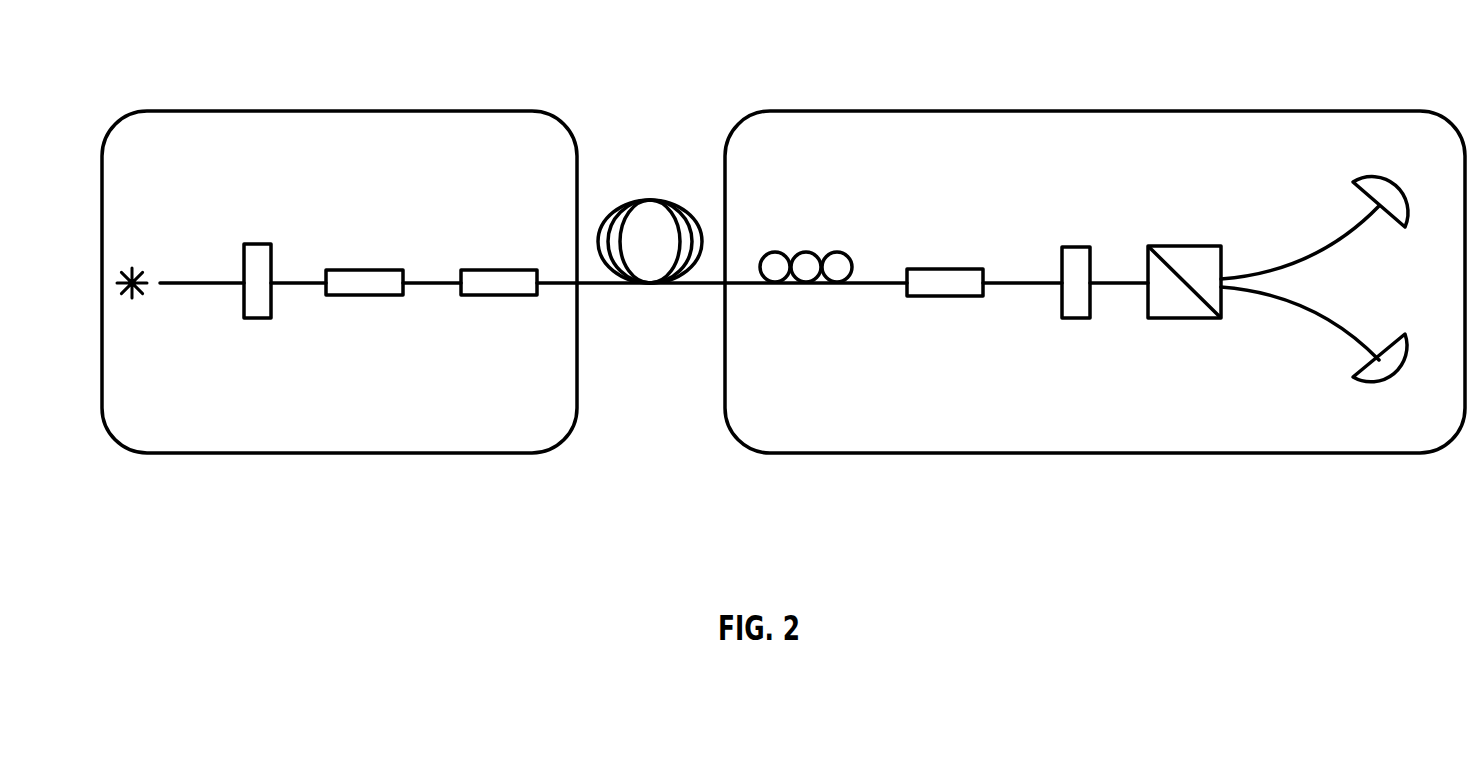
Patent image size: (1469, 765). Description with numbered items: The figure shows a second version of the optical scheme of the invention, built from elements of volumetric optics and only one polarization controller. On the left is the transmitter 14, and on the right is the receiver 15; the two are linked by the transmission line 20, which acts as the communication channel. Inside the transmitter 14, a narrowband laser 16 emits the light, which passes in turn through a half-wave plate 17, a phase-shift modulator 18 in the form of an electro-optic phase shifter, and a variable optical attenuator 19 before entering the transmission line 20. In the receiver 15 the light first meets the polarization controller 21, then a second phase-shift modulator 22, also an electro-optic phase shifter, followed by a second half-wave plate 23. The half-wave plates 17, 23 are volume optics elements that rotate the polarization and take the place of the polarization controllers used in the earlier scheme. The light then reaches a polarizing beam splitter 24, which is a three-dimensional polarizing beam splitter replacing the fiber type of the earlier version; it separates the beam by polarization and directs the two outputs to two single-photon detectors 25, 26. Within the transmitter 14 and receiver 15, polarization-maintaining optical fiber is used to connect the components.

The transmitter 14 is at (339, 241).
The receiver 15 is at (1095, 240).
The narrowband laser 16 is at (191, 324).
The half-wave plate 17 is at (256, 252).
The phase-shift modulator 18 is at (374, 223).
The variable optical attenuator 19 is at (483, 318).
The transmission line 20 is at (637, 175).
The polarization controller 21 is at (821, 220).
The phase-shift modulator 22 is at (924, 315).
The half-wave plate 23 is at (1074, 252).
The polarizing beam splitter 24 is at (1243, 289).
The single-photon detector 25 is at (1372, 138).
The single-photon detector 26 is at (1351, 428).